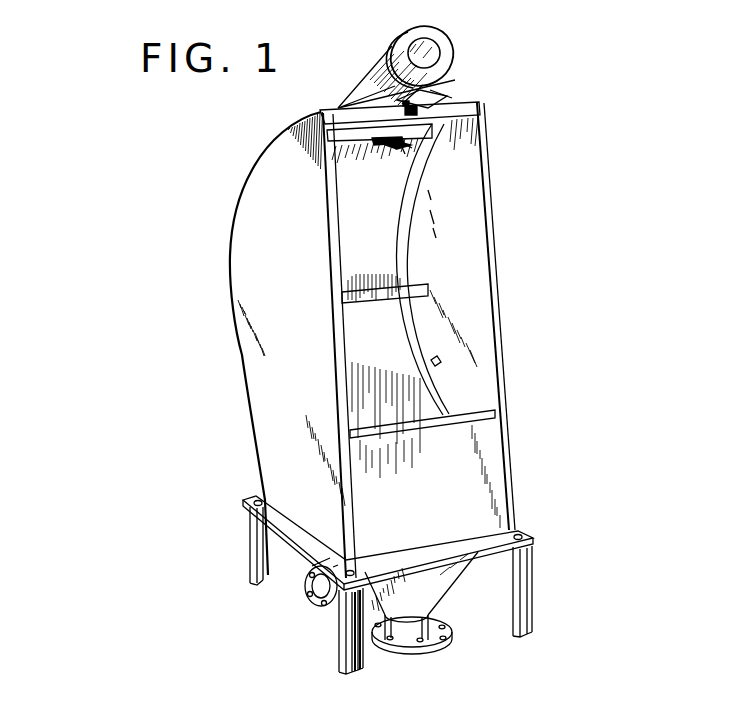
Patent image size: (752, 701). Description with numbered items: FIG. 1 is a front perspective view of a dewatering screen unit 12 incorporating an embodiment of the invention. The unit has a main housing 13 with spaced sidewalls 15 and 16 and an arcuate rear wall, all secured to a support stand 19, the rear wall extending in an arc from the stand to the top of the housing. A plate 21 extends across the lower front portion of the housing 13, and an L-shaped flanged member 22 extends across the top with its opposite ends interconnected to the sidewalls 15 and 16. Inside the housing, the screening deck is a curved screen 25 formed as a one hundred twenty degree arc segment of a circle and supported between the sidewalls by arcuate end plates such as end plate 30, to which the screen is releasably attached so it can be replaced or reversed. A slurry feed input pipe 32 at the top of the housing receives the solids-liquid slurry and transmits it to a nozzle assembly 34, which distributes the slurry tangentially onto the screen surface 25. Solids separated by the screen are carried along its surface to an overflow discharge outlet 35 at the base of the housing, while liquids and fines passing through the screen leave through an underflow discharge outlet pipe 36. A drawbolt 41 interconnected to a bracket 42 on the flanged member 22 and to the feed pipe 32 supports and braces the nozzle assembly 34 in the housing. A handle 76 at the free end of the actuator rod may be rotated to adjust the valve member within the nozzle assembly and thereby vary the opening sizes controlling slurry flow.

The dewatering screen unit 12 is at (508, 168).
The main housing 13 is at (466, 322).
The sidewall 15 is at (272, 351).
The sidewall 16 is at (470, 272).
The support stand 19 is at (532, 532).
The plate 21 is at (468, 465).
The L-shaped flanged member 22 is at (463, 113).
The curved screen 25 is at (355, 283).
The arcuate end plate 30 is at (403, 242).
The slurry feed input pipe 32 is at (380, 82).
The nozzle assembly 34 is at (454, 95).
The overflow discharge outlet 35 is at (430, 588).
The underflow discharge outlet pipe 36 is at (327, 583).
The drawbolt 41 is at (426, 96).
The bracket 42 is at (405, 108).
The handle 76 is at (397, 145).